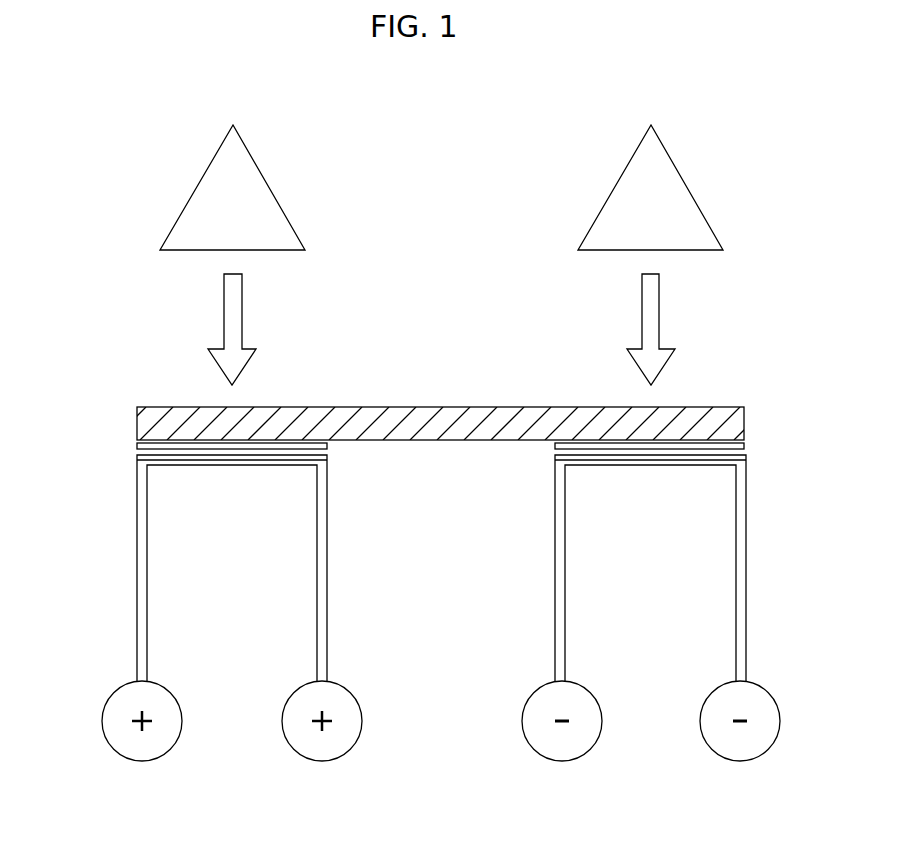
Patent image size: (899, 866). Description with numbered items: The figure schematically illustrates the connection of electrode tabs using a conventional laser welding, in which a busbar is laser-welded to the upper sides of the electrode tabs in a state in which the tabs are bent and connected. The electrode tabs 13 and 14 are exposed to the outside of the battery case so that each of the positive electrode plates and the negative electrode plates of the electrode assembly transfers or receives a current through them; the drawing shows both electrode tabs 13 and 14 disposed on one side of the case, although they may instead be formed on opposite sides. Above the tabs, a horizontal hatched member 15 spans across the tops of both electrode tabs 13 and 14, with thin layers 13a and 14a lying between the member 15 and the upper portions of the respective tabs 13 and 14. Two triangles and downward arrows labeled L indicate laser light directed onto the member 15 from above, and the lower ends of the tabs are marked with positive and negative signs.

The light L is at (268, 182).
The photoelectric conversion layer / substrate 15 is at (441, 407).
The electrode tab 13 is at (137, 570).
The first electrode layer 13a is at (228, 468).
The electrode tab 14 is at (556, 570).
The second electrode layer 14a is at (647, 468).